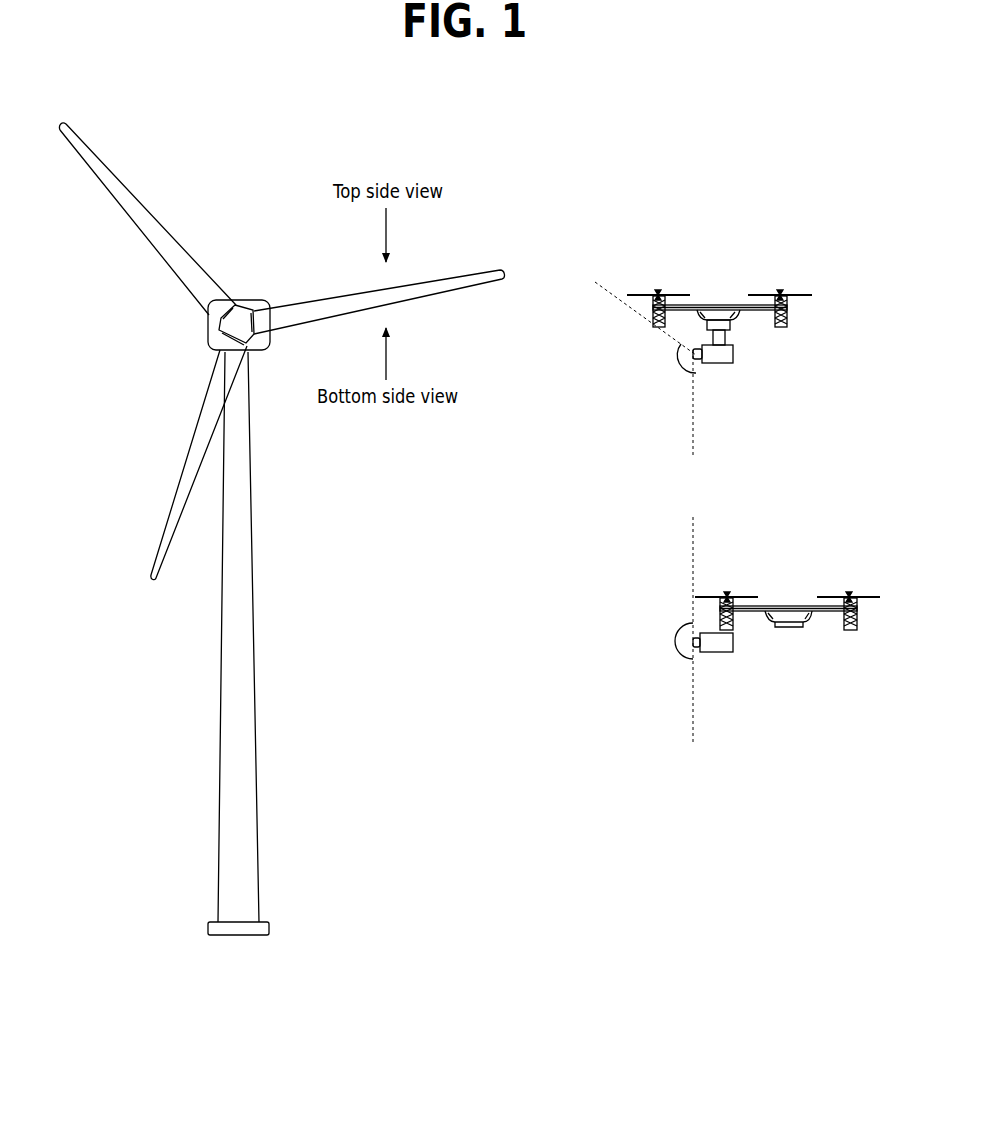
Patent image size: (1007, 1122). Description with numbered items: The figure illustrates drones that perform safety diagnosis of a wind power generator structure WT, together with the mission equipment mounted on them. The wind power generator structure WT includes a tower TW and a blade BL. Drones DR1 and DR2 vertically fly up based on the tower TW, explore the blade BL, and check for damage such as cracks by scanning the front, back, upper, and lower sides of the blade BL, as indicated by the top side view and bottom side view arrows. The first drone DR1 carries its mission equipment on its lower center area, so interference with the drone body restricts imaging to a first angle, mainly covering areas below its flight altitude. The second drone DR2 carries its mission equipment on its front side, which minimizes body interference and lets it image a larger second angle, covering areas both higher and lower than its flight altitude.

The blade BL is at (140, 218).
The tower TW is at (233, 668).
The wind power generator structure WT is at (283, 555).
The first drone DR1 is at (796, 295).
The second drone DR2 is at (866, 597).